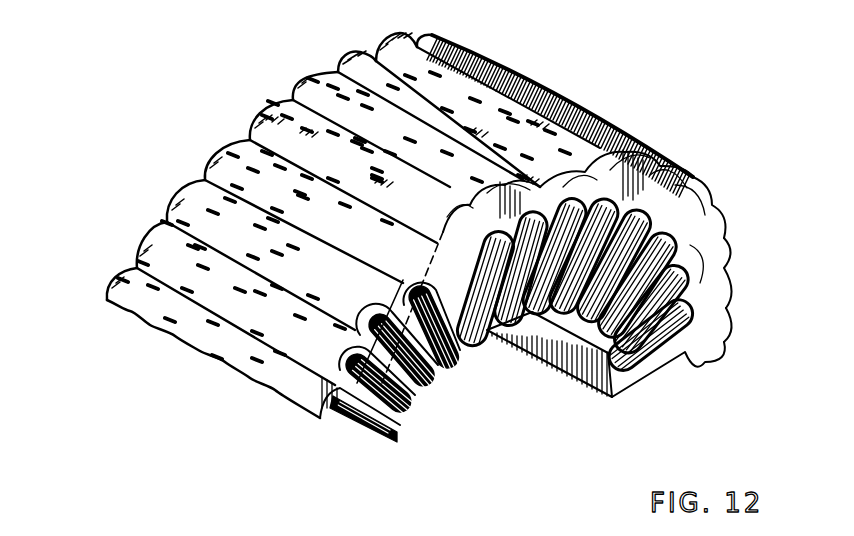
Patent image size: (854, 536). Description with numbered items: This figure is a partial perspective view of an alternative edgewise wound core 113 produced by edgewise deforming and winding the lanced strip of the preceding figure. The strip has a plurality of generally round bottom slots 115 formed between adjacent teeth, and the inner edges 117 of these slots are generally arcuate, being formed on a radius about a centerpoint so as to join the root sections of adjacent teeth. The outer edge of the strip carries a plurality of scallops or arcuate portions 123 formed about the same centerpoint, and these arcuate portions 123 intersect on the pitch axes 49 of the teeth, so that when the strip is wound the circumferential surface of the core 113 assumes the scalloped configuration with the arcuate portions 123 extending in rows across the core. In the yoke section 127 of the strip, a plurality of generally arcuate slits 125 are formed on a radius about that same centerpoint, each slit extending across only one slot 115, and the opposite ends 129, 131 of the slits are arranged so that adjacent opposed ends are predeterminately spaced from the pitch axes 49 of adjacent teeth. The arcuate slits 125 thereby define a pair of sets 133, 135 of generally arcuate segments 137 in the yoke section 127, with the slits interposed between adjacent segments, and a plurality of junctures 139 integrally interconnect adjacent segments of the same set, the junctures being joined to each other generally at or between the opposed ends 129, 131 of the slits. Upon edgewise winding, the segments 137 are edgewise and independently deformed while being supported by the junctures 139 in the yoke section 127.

The edgewise wound core 113 is at (628, 52).
The arcuate portions 123 is at (663, 153).
The yoke section 127 is at (554, 124).
The inner edges 117 is at (695, 263).
The arcuate slits 125 is at (712, 296).
The segment set 133 is at (720, 339).
The segment set 135 is at (707, 350).
The round bottom slots 115 is at (631, 335).
The pitch axes 49 is at (442, 413).
The junctures 139 is at (445, 258).
The opposite end of slit 131 is at (370, 340).
The opposite end of slit 129 is at (338, 372).
The arcuate segments 137 is at (320, 407).